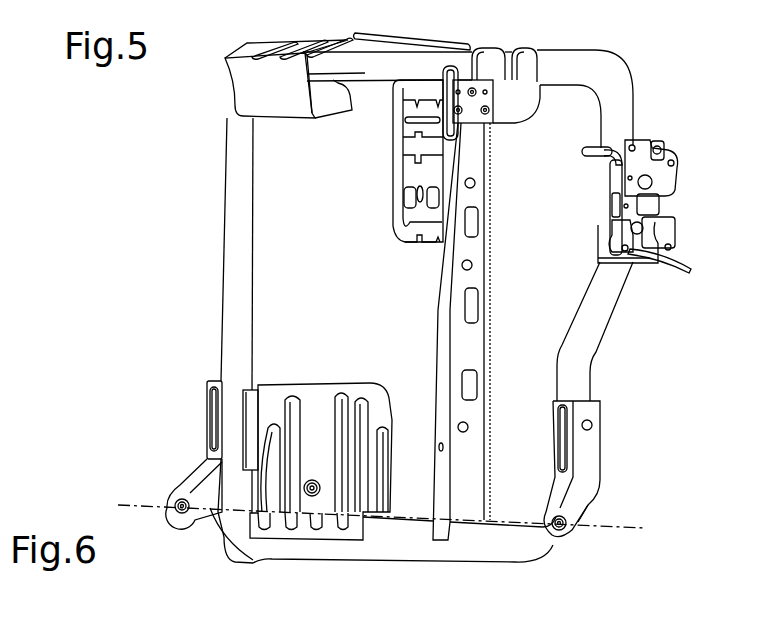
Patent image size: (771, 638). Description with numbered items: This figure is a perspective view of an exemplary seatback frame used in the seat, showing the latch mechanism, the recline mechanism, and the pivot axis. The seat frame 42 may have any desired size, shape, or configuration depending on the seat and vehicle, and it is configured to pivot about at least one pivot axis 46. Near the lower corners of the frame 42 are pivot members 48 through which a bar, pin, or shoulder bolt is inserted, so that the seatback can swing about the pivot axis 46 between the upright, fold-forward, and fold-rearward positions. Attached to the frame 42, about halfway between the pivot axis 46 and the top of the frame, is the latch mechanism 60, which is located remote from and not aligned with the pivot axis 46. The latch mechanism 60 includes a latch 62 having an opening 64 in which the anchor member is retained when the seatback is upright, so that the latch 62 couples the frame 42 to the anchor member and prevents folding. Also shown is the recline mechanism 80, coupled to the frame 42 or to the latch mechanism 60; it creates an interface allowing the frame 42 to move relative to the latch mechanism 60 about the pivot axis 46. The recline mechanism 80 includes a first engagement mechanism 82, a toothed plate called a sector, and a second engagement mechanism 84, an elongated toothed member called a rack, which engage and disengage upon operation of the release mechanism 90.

The seat frame 42 is at (568, 63).
The pivot axis 46 is at (144, 504).
The pivot members 48 is at (182, 513).
The latch mechanism 60 is at (676, 153).
The latch 62 is at (663, 232).
The opening 64 is at (662, 206).
The recline mechanism 80 is at (646, 266).
The first engagement mechanism (sector) 82 is at (633, 244).
The second engagement mechanism (rack) 84 is at (692, 265).
The release mechanism 90 is at (270, 59).